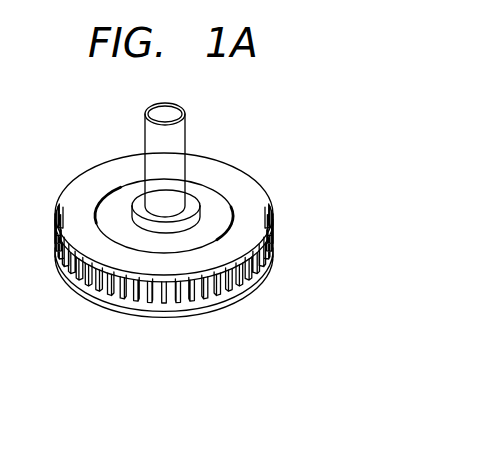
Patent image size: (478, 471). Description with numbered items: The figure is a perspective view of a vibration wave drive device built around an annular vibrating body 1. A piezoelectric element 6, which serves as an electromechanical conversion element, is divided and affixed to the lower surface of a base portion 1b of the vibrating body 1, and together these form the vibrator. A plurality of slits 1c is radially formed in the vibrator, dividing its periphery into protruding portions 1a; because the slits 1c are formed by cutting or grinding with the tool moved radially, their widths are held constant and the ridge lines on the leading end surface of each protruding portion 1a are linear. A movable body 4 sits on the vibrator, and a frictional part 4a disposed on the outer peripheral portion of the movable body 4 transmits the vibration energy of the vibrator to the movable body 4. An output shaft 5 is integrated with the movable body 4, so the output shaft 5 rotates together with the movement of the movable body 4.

The vibrating body 1 is at (202, 290).
The protruding portion 1a is at (272, 260).
The base portion 1b is at (243, 288).
The slit 1c is at (164, 292).
The movable body 4 is at (248, 194).
The frictional part 4a is at (276, 228).
The output shaft 5 is at (176, 141).
The piezoelectric element 6 is at (123, 311).